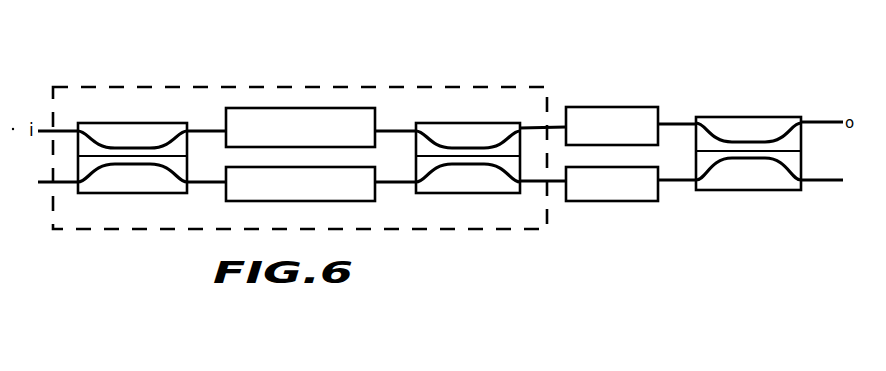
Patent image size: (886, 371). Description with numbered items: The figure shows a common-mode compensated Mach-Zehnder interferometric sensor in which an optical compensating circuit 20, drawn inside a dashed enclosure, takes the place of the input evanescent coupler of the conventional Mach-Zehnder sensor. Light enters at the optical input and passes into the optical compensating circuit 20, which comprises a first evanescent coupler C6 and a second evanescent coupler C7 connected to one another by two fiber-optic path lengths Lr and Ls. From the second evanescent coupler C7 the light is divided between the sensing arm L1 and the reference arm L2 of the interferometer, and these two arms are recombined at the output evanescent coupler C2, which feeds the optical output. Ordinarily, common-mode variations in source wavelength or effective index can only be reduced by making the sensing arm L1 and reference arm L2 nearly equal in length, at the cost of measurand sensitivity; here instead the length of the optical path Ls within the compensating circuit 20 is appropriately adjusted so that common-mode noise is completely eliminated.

The optical compensating circuit 20 is at (443, 232).
The evanescent coupler C6 is at (126, 119).
The evanescent coupler C7 is at (466, 118).
The evanescent coupler C2 is at (746, 116).
The fiber-optic path length Lr is at (300, 127).
The fiber-optic path length Ls is at (300, 184).
The sensing arm L1 is at (612, 184).
The reference arm L2 is at (612, 126).